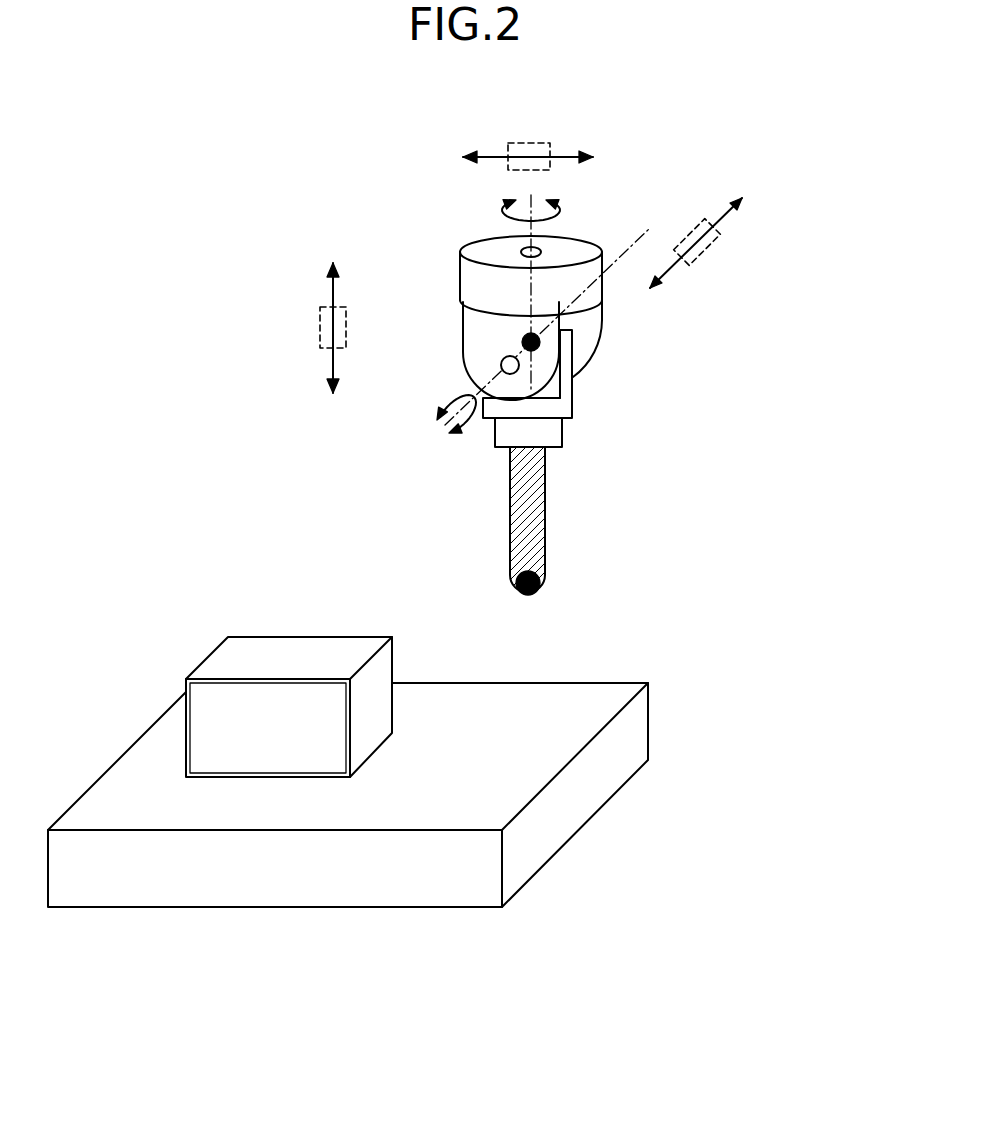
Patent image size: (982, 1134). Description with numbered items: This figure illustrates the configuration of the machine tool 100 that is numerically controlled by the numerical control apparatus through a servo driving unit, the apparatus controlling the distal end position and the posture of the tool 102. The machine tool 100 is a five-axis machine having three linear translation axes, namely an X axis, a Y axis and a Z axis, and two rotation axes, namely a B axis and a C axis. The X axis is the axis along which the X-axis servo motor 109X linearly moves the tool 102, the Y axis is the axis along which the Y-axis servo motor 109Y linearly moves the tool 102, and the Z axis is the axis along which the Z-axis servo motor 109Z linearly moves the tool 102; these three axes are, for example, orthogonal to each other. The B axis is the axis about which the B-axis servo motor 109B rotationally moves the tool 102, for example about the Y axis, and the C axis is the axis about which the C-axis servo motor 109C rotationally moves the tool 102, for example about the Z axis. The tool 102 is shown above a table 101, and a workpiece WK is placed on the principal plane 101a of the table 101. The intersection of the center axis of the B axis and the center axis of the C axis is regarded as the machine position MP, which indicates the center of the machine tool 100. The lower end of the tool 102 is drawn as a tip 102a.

The machine tool 100 is at (762, 396).
The table 101 is at (348, 822).
The principal plane 101a is at (133, 772).
The tool 102 is at (575, 503).
The stylus tip ball 102a is at (548, 580).
The X-axis servo motor 109X is at (548, 142).
The Y-axis servo motor 109Y is at (718, 240).
The Z-axis servo motor 109Z is at (327, 307).
The B-axis servo motor 109B is at (501, 365).
The C-axis servo motor 109C is at (520, 250).
The machine position MP is at (522, 342).
The workpiece WK is at (393, 710).